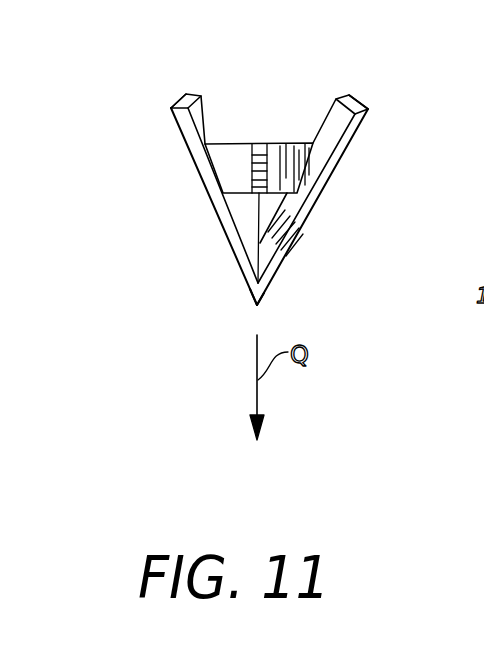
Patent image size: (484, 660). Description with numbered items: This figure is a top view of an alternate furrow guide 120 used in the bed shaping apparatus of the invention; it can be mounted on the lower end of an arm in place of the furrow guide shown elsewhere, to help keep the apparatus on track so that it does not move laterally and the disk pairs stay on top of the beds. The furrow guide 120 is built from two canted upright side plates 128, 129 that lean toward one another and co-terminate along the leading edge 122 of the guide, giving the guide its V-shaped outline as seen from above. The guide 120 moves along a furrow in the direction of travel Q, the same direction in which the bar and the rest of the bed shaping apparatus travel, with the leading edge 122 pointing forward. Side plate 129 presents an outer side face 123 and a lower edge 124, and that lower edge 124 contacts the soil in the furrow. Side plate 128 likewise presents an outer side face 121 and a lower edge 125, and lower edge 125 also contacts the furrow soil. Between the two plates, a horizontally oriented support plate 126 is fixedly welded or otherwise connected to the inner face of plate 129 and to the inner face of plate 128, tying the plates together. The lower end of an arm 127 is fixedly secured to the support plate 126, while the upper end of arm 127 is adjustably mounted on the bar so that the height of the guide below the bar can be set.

The furrow guide 120 is at (245, 169).
The outer side face 121 is at (293, 255).
The leading edge 122 is at (257, 304).
The outer side face 123 is at (172, 137).
The lower edge 124 is at (210, 108).
The lower edge 125 is at (335, 98).
The support plate 126 is at (243, 153).
The arm 127 is at (268, 165).
The side plate 128 is at (373, 110).
The side plate 129 is at (175, 93).